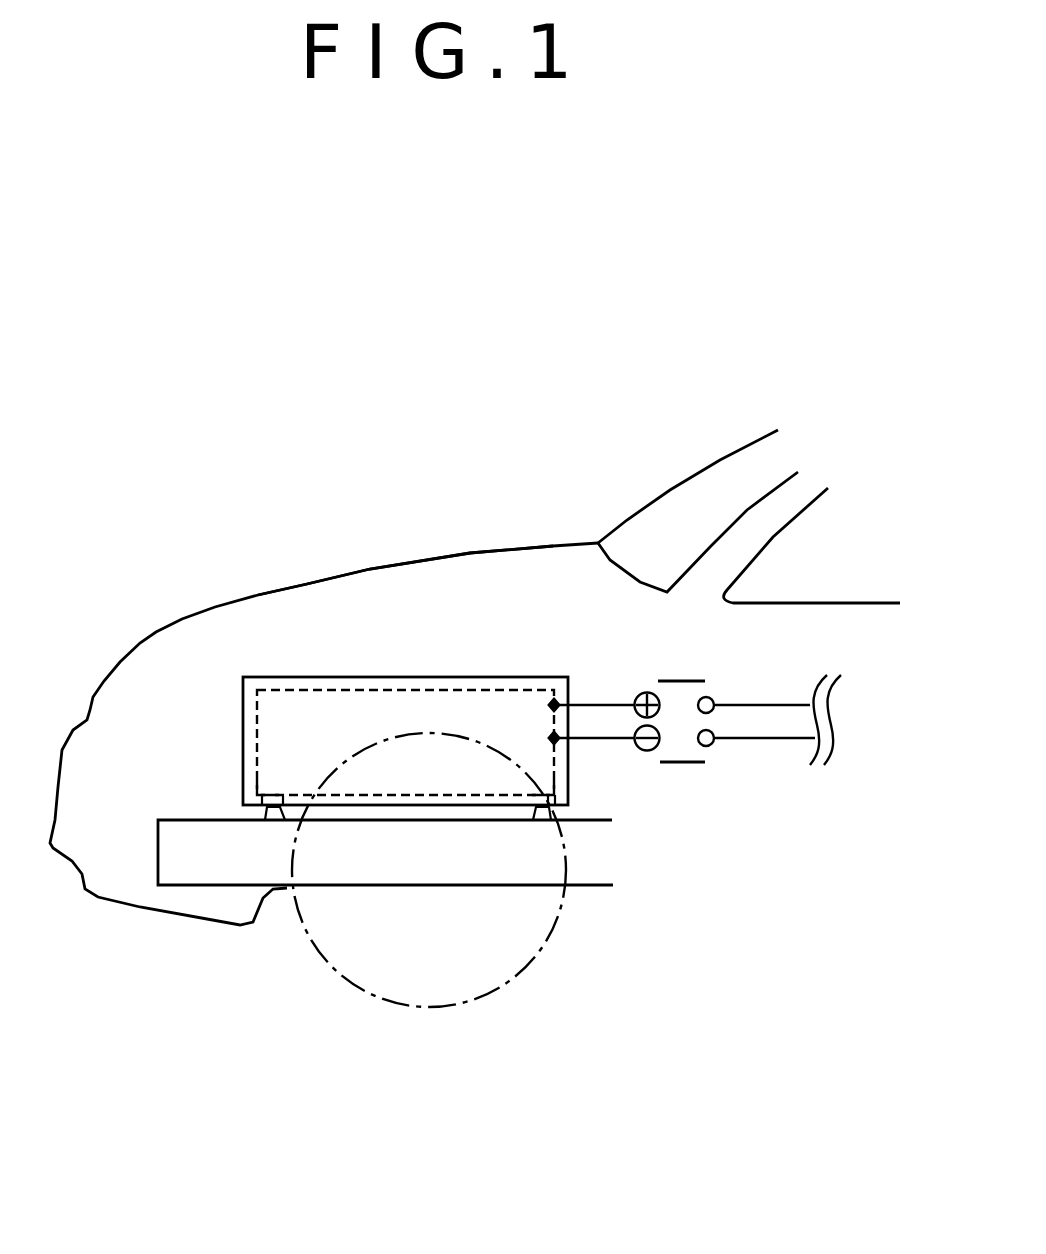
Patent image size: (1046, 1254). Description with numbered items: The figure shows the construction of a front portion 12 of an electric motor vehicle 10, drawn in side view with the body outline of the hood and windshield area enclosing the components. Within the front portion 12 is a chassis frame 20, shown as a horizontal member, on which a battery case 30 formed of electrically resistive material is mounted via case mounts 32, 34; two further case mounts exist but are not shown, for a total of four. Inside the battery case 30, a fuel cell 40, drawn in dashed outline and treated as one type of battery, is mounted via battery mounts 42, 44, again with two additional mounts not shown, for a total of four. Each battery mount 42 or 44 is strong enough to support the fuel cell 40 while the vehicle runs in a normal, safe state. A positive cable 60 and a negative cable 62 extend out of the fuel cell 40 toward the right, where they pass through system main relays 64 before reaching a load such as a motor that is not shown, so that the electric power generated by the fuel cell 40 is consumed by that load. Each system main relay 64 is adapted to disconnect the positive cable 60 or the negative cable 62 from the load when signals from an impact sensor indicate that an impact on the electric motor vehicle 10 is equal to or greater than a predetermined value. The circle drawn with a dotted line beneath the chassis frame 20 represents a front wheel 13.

The electric motor vehicle 10 is at (593, 375).
The front portion 12 is at (417, 556).
The front wheel 13 is at (470, 1004).
The chassis frame 20 is at (590, 887).
The battery case 30 is at (242, 680).
The case mount 32 is at (268, 809).
The case mount 34 is at (552, 812).
The fuel cell 40 is at (470, 690).
The battery mount 42 is at (242, 800).
The battery mount 44 is at (555, 797).
The positive cable 60 is at (643, 690).
The negative cable 62 is at (647, 751).
The system main relay 64 is at (682, 672).